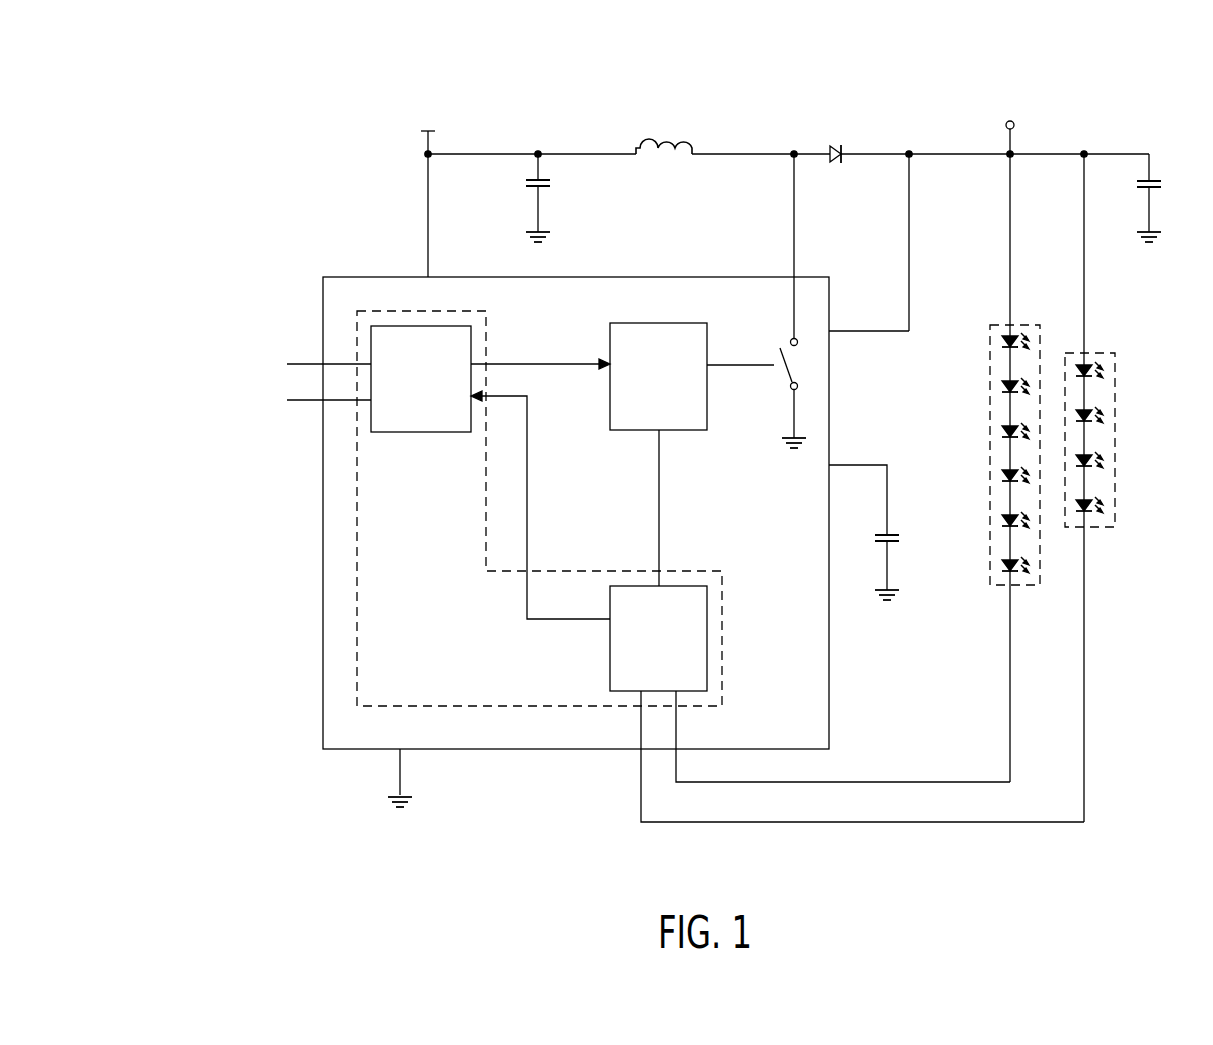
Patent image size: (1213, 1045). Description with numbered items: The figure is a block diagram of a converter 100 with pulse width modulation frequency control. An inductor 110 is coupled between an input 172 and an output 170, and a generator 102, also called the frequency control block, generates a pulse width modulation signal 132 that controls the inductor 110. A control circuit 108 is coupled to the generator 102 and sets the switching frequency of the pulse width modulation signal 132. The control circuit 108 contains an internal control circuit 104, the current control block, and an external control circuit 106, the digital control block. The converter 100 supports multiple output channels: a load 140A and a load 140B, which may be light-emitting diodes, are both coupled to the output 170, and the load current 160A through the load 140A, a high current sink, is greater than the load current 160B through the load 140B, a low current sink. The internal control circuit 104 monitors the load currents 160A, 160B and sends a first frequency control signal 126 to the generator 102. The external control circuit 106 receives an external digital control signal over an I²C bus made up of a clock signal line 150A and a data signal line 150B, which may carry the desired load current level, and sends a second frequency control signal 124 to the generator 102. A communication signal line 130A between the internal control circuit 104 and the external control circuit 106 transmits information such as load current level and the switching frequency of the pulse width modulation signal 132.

The converter 100 is at (170, 108).
The generator 102 is at (658, 376).
The internal control circuit 104 is at (658, 638).
The external control circuit 106 is at (421, 379).
The control circuit 108 is at (378, 707).
The inductor 110 is at (679, 141).
The second frequency control signal 124 is at (528, 364).
The first frequency control signal 126 is at (660, 500).
The communication signal line 130A is at (528, 500).
The pulse width modulation signal 132 is at (712, 366).
The load 140A is at (990, 553).
The load 140B is at (1117, 497).
The clock signal line 150A is at (302, 362).
The data signal line 150B is at (302, 398).
The load current 160A is at (888, 782).
The load current 160B is at (1085, 808).
The output 170 is at (1006, 151).
The input 172 is at (433, 152).